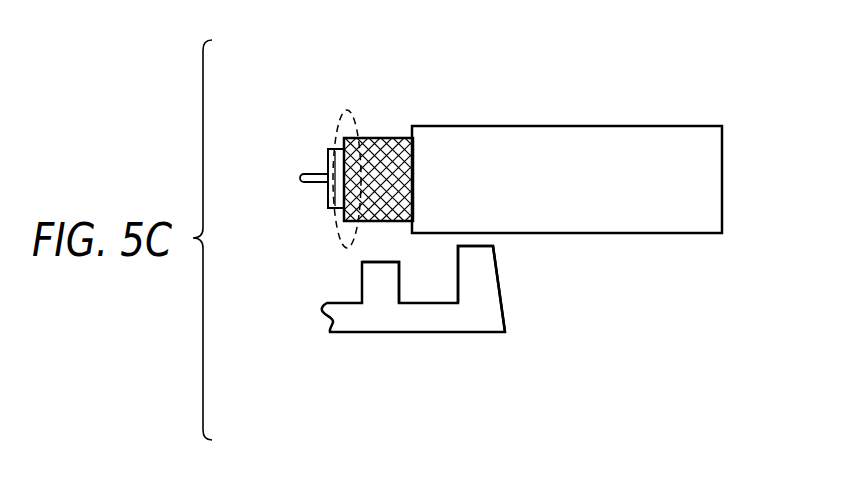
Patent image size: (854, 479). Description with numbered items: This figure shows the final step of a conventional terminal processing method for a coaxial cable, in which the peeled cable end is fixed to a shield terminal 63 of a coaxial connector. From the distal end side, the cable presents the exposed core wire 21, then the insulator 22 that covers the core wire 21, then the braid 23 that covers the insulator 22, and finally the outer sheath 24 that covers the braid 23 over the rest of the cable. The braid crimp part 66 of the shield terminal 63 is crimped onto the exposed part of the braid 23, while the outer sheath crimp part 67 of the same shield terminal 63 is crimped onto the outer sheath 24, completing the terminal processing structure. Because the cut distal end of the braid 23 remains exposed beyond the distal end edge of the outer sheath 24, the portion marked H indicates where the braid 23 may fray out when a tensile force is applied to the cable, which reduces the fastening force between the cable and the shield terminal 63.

The core wire 21 is at (317, 176).
The insulator 22 is at (337, 149).
The braid 23 is at (393, 137).
The outer sheath 24 is at (533, 136).
The portion where the braid may fray H is at (345, 110).
The shield terminal 63 is at (380, 337).
The braid crimp part 66 is at (390, 278).
The outer sheath crimp part 67 is at (487, 277).